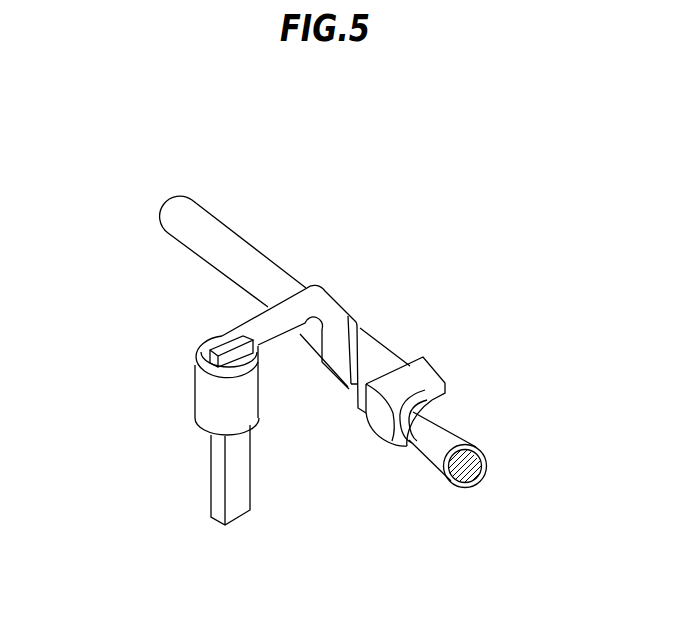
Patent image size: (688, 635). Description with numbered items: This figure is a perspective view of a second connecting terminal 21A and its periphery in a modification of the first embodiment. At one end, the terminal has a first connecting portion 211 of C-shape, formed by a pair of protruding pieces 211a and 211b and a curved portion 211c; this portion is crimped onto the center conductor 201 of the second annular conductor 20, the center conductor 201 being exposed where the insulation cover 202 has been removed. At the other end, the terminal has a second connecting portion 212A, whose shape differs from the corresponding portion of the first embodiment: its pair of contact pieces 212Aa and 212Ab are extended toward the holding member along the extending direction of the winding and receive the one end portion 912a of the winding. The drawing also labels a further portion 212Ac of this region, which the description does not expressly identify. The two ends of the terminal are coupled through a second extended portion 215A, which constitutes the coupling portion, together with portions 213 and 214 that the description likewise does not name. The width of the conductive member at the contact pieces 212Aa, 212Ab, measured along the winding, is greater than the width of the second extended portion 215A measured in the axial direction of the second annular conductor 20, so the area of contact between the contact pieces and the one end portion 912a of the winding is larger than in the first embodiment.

The second annular conductor 20 is at (381, 359).
The center conductor 201 is at (473, 460).
The insulation cover 202 is at (481, 483).
The second connecting terminal 21A is at (276, 378).
The first connecting portion 211 is at (440, 412).
The protruding piece 211a is at (423, 375).
The protruding piece 211b is at (407, 438).
The curved portion 211c is at (383, 412).
The second connecting portion 212A is at (208, 410).
The contact piece 212Aa is at (221, 340).
The contact piece 212Ab is at (238, 422).
The cylindrical portion 212Ac is at (205, 419).
The one end portion of the winding 912a is at (216, 357).
The connecting portion 213 is at (349, 389).
The bent portion 214 is at (335, 347).
The second extended portion 215A is at (287, 320).